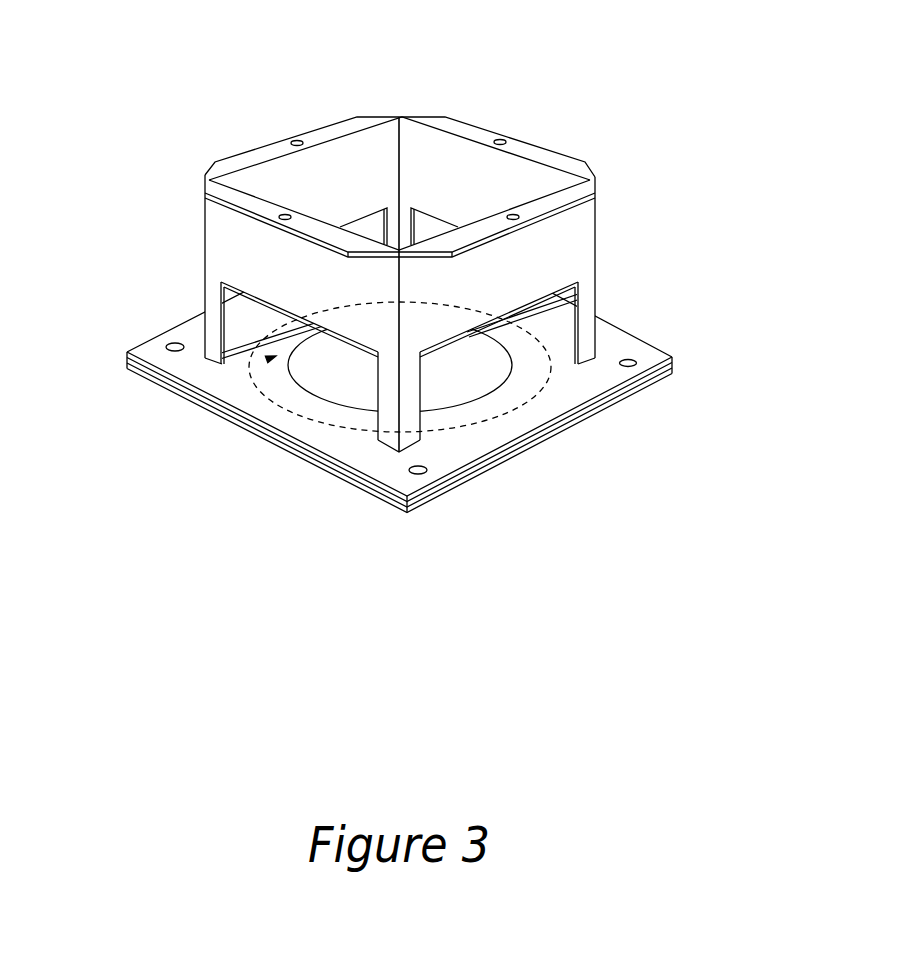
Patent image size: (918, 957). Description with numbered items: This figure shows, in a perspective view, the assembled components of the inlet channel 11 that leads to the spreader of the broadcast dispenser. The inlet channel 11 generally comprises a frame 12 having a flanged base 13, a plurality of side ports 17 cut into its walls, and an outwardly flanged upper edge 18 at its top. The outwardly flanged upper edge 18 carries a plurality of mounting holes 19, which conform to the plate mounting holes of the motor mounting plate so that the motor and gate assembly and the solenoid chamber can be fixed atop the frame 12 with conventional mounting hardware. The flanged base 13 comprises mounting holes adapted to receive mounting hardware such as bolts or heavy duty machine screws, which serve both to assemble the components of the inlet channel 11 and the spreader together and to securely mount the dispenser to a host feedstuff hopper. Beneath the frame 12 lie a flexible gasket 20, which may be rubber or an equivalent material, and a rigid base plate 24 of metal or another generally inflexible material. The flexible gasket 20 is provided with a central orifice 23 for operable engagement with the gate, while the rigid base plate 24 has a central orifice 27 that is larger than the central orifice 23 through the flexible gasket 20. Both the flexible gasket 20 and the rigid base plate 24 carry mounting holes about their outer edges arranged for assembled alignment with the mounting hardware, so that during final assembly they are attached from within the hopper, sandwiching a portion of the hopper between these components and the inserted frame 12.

The inlet channel 11 is at (247, 497).
The frame 12 is at (560, 243).
The flanged base 13 is at (462, 452).
The side ports 17 is at (274, 358).
The outwardly flanged upper edge 18 is at (325, 137).
The mounting holes 19 is at (502, 139).
The flexible gasket 20 is at (676, 366).
The central orifice 23 is at (493, 316).
The rigid base plate 24 is at (400, 507).
The central orifice 27 is at (530, 400).